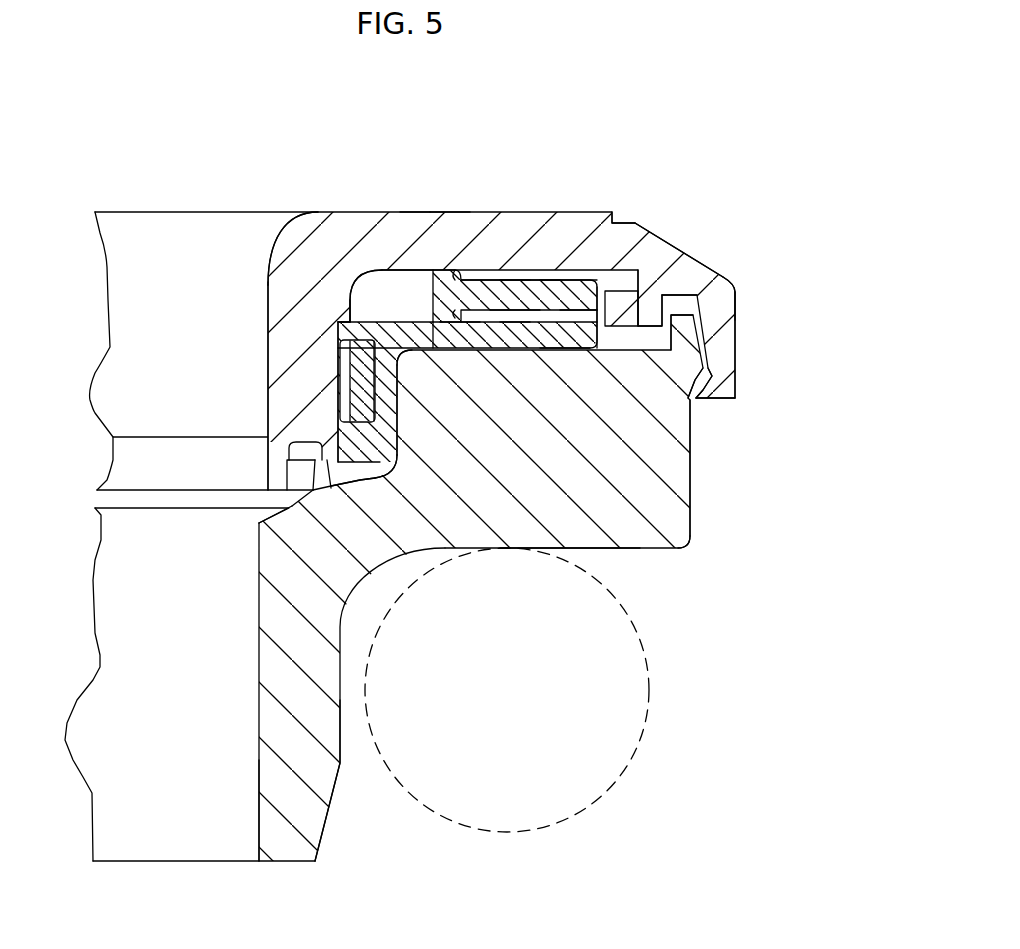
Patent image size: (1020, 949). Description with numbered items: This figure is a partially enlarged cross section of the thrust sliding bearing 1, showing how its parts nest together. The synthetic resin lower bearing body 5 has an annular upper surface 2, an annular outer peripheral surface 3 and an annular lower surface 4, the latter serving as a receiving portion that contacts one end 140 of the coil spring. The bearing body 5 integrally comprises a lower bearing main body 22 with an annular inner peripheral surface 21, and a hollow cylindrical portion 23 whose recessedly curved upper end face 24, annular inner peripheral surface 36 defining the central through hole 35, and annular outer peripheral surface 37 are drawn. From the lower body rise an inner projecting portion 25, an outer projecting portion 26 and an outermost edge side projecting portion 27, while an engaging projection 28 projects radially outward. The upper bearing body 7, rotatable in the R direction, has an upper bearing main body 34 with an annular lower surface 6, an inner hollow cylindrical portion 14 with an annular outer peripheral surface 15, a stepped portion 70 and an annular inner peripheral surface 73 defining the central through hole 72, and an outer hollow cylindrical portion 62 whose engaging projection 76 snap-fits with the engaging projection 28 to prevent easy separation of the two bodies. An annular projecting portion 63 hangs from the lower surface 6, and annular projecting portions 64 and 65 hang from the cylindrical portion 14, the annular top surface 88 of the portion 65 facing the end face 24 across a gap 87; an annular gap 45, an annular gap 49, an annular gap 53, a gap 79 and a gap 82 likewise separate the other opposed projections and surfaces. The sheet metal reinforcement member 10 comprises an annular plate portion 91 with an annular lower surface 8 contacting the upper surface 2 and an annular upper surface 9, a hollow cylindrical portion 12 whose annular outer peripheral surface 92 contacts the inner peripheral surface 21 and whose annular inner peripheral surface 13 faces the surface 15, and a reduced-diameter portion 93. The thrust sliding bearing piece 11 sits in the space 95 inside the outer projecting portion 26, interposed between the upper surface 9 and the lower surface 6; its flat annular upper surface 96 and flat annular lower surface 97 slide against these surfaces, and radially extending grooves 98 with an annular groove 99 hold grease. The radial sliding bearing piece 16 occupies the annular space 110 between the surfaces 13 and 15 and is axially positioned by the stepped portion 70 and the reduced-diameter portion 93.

The thrust sliding bearing 1 is at (616, 188).
The annular upper surface 2 is at (492, 293).
The annular outer peripheral surface 3 is at (692, 462).
The annular lower surface 4 is at (640, 553).
The annular bearing body 5 is at (692, 497).
The annular lower surface 6 is at (413, 297).
The annular bearing body 7 is at (178, 207).
The annular lower surface 8 is at (553, 348).
The annular upper surface 9 is at (517, 292).
The reinforcement member 10 is at (378, 312).
The thrust sliding bearing piece 11 is at (547, 288).
The hollow cylindrical portion 12 is at (385, 440).
The annular inner peripheral surface 13 is at (357, 368).
The hollow cylindrical portion 14 is at (300, 338).
The annular outer peripheral surface 15 is at (340, 352).
The radial sliding bearing piece 16 is at (357, 395).
The annular inner peripheral surface 21 is at (400, 356).
The lower bearing main body 22 is at (603, 497).
The hollow cylindrical portion 23 is at (268, 665).
The recessedly curved upper end face 24 is at (388, 468).
The inner projecting portion 25 is at (300, 494).
The outer projecting portion 26 is at (655, 255).
The outermost edge side projecting portion 27 is at (692, 325).
The engaging projection 28 is at (695, 366).
The upper bearing main body 34 is at (450, 280).
The central through hole 35 is at (128, 828).
The annular inner peripheral surface 36 is at (259, 806).
The annular outer peripheral surface 37 is at (341, 735).
The annular gap 45 is at (307, 447).
The annular gap 49 is at (642, 220).
The annular gap 53 is at (682, 298).
The outer hollow cylindrical portion 62 is at (722, 328).
The annular projecting portion 63 is at (652, 315).
The annular projecting portion 64 is at (277, 475).
The annular projecting portion 65 is at (323, 470).
The stepped portion 70 is at (278, 250).
The central through hole 72 is at (120, 218).
The annular inner peripheral surface 73 is at (262, 290).
The engaging projection 76 is at (703, 390).
The gap 79 is at (705, 292).
The gap 82 is at (273, 497).
The gap 87 is at (345, 478).
The annular top surface 88 is at (305, 478).
The annular plate portion 91 is at (563, 340).
The annular outer peripheral surface 92 is at (398, 408).
The reduced-diameter portion 93 is at (398, 450).
The space 95 is at (395, 300).
The flat annular upper surface 96 is at (510, 272).
The flat annular lower surface 97 is at (612, 337).
The radially extending grooves 98 is at (583, 290).
The annular groove 99 is at (468, 297).
The annular space 110 is at (337, 344).
The one end 140 is at (645, 772).